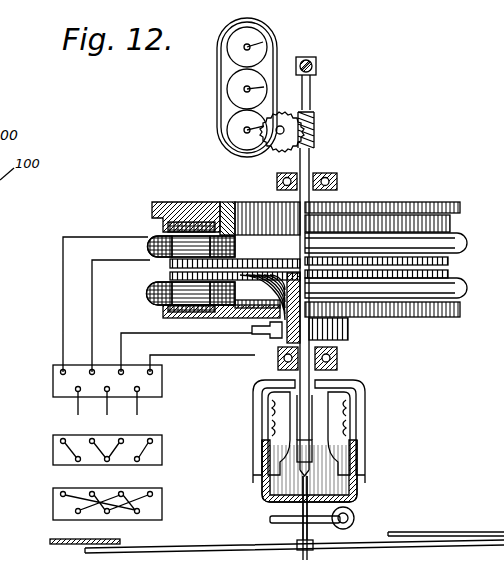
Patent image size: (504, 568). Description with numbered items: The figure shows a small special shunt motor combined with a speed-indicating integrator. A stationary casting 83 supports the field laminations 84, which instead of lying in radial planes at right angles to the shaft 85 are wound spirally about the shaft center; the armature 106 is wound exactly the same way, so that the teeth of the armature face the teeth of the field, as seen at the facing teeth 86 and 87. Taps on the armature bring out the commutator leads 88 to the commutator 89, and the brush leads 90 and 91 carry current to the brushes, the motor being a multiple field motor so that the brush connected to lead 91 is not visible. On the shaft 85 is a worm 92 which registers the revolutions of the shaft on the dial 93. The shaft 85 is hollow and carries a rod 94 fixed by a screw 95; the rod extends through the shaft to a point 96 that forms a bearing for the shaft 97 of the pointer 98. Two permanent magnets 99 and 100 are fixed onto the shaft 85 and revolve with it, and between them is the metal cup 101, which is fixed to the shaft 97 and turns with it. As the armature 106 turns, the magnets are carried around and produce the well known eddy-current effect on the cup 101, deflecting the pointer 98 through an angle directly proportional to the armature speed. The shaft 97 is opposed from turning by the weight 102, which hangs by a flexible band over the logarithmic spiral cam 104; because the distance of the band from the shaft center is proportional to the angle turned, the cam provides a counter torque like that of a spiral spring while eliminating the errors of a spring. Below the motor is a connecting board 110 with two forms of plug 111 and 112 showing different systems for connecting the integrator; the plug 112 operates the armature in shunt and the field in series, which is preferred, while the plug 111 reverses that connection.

The stationary casting 83 is at (172, 193).
The field laminations 84 is at (207, 214).
The shaft 85 is at (315, 176).
The armature teeth 86 is at (168, 266).
The field teeth 87 is at (176, 292).
The commutator leads 88 is at (165, 316).
The commutator 89 is at (349, 329).
The brush lead 90 is at (207, 329).
The brush lead 91 is at (227, 354).
The worm 92 is at (314, 130).
The dial 93 is at (217, 85).
The rod 94 is at (316, 70).
The screw 95 is at (316, 62).
The bearing point 96 is at (313, 464).
The pointer shaft 97 is at (313, 506).
The pointer 98 is at (220, 549).
The permanent magnet 99 is at (364, 392).
The permanent magnet 100 is at (262, 410).
The metal cup 101 is at (262, 491).
The weight 102 is at (356, 518).
The logarithmic spiral cam 104 is at (270, 521).
The armature 106 is at (462, 308).
The connecting board 110 is at (58, 382).
The plug 111 is at (53, 454).
The plug 112 is at (53, 507).